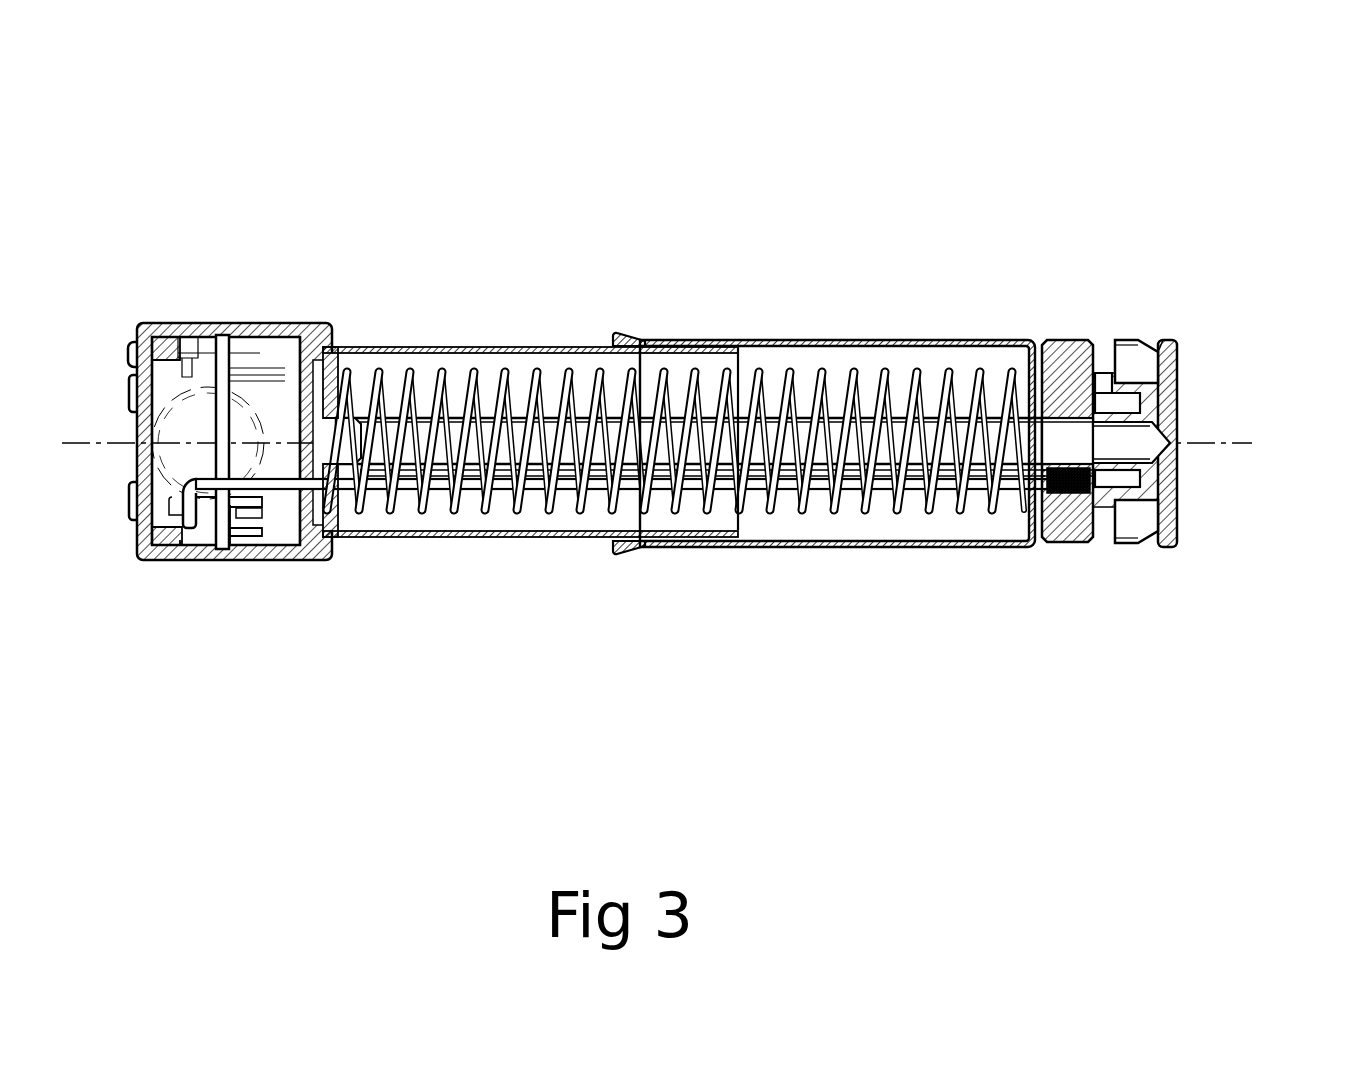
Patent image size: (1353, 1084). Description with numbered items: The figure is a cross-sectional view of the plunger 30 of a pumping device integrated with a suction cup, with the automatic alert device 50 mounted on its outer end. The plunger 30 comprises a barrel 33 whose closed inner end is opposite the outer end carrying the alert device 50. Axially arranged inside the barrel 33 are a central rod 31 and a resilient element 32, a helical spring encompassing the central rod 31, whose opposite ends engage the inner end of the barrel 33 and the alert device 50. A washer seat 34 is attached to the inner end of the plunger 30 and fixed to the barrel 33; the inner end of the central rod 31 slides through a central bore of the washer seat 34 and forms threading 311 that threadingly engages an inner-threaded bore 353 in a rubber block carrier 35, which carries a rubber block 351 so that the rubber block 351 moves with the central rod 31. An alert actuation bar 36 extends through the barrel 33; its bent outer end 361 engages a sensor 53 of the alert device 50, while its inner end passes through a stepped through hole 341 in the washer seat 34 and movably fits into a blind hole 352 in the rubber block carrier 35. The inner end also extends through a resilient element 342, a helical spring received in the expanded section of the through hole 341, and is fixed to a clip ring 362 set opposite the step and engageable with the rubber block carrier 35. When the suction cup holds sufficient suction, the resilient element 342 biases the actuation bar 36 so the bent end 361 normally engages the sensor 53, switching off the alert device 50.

The plunger 30 is at (447, 172).
The central rod 31 is at (573, 500).
The threading 311 is at (1150, 400).
The resilient element 32 is at (472, 376).
The barrel 33 is at (775, 546).
The washer seat 34 is at (1062, 543).
The through hole 341 is at (1088, 543).
The resilient element 342 is at (1047, 543).
The rubber block carrier 35 is at (1180, 541).
The rubber block 351 is at (1118, 340).
The blind hole 352 is at (1145, 470).
The inner-threaded bore 353 is at (1164, 362).
The alert actuation bar 36 is at (385, 506).
The bent end 361 is at (181, 510).
The clip ring 362 is at (1150, 412).
The alert device 50 is at (213, 333).
The sensor 53 is at (205, 528).